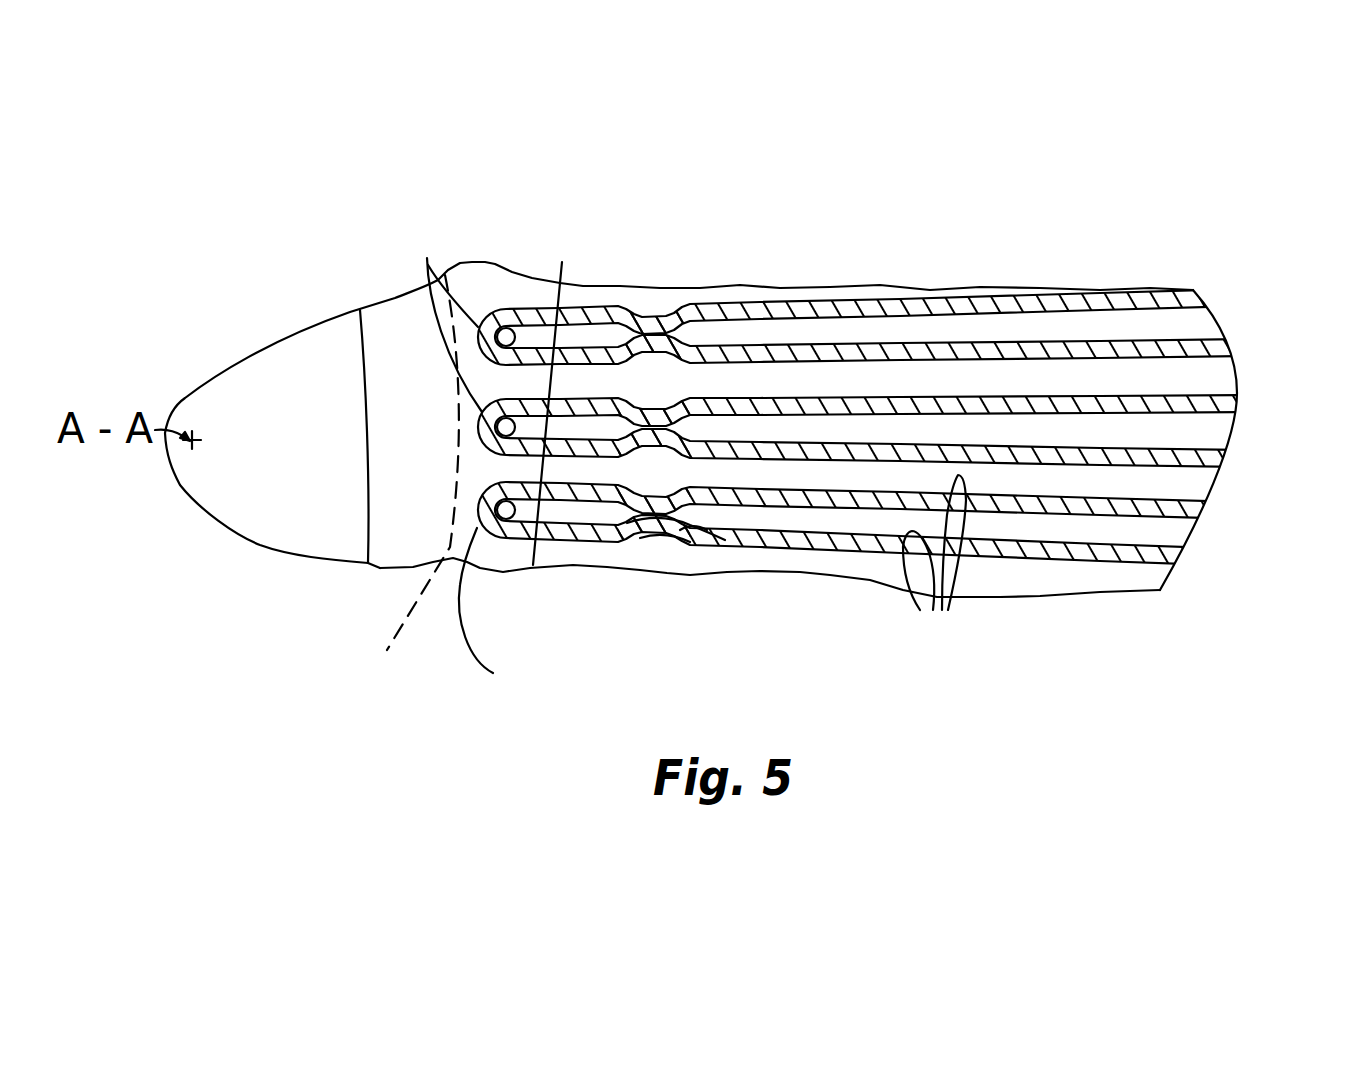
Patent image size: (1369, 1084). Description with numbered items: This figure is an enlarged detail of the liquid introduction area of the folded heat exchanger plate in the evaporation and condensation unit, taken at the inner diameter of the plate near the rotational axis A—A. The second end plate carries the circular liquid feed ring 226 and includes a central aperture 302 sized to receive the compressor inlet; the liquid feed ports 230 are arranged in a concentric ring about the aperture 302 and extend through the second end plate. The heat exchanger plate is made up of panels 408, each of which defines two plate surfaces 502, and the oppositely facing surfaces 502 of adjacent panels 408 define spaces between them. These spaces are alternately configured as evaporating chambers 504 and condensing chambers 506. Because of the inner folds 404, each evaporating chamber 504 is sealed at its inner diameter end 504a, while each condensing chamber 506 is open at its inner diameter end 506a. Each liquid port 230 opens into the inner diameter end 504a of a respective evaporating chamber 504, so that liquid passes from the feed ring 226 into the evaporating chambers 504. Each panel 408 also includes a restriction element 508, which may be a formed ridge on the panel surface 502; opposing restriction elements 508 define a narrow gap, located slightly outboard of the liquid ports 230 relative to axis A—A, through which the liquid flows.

The liquid feed ring 226 is at (402, 488).
The liquid feed ports 230 is at (495, 600).
The aperture 302 is at (370, 484).
The inner folds 404 is at (484, 458).
The panel 408 is at (1018, 445).
The plate surfaces 502 is at (932, 565).
The evaporating chambers 504 is at (1212, 433).
The inner diameter ends of evaporating chambers 504a is at (592, 338).
The condensing chambers 506 is at (1222, 376).
The inner diameter ends of condensing chambers 506a is at (612, 387).
The restriction element 508 is at (713, 520).